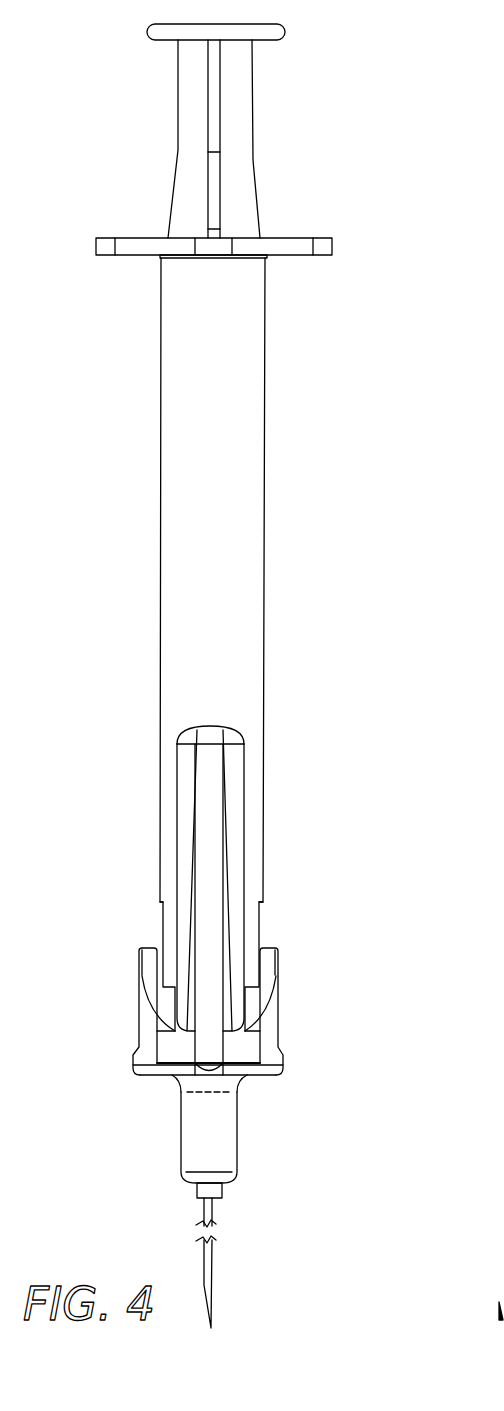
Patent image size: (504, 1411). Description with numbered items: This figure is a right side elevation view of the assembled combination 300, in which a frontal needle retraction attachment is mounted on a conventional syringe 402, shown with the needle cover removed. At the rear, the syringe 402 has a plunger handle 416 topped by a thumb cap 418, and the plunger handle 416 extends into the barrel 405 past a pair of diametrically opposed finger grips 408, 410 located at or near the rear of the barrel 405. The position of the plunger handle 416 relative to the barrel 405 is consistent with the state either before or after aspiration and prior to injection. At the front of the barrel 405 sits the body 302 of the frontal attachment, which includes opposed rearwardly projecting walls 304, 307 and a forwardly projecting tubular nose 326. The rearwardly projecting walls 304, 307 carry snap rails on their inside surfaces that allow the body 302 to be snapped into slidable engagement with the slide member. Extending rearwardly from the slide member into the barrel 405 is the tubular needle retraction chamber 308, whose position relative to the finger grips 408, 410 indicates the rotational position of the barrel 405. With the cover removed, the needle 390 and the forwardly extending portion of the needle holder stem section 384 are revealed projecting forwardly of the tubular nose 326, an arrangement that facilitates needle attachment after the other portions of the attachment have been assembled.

The assembled combination 300 is at (260, 676).
The body 302 is at (202, 994).
The rearwardly projecting wall 304 is at (148, 960).
The rearwardly projecting wall 307 is at (272, 1003).
The needle retraction chamber 308 is at (217, 833).
The tubular nose 326 is at (228, 1151).
The needle holder stem section 384 is at (200, 1188).
The needle 390 is at (210, 1282).
The syringe 402 is at (157, 418).
The barrel 405 is at (245, 513).
The finger grip 408 is at (128, 238).
The finger grip 410 is at (305, 238).
The plunger handle 416 is at (238, 178).
The thumb cap 418 is at (150, 31).